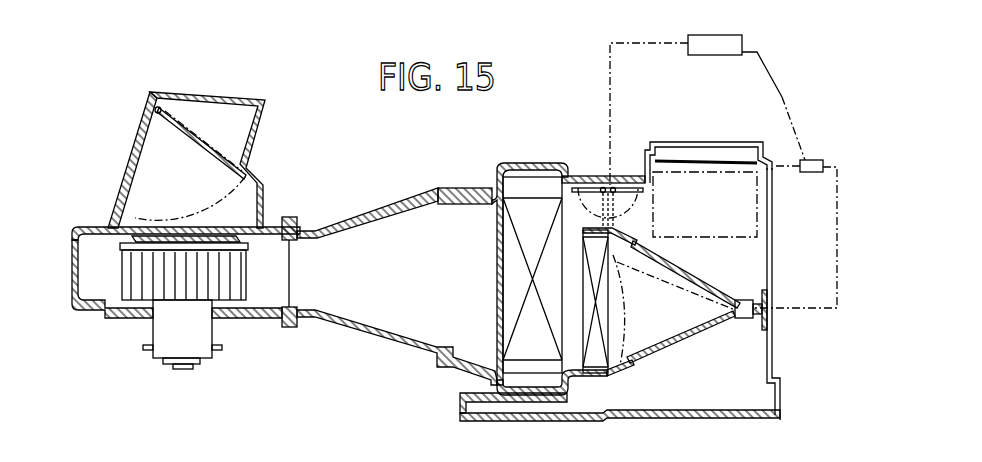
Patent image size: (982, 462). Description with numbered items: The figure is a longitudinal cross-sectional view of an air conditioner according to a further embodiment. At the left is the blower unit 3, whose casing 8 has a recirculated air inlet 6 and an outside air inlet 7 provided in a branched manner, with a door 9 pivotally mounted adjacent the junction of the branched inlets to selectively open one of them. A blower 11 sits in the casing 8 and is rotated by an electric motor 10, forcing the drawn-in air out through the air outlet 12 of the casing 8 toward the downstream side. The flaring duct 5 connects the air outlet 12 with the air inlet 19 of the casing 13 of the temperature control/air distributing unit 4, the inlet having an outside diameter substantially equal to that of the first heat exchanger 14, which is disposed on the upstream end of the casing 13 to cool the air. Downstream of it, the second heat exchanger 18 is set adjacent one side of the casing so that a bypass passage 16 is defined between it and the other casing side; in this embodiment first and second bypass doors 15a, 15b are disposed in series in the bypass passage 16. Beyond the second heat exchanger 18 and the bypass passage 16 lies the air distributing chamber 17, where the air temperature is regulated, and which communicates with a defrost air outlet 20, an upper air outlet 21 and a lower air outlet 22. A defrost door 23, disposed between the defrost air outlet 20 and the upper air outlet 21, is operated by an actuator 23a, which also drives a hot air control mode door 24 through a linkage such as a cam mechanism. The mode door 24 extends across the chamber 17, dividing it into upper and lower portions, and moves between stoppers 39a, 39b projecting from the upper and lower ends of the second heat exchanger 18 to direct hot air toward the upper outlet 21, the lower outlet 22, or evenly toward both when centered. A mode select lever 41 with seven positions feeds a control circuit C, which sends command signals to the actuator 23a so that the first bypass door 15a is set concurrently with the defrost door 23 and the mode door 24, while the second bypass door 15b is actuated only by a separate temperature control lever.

The blower unit 3 is at (91, 220).
The temperature control/air distributing unit 4 is at (518, 160).
The duct 5 is at (357, 240).
The recirculated air inlet 6 is at (130, 163).
The outside air inlet 7 is at (226, 97).
The casing 8 is at (73, 296).
The door 9 is at (148, 142).
The electric motor 10 is at (200, 347).
The blower 11 is at (152, 283).
The air outlet 12 is at (270, 290).
The casing 13 is at (493, 380).
The first heat exchanger 14 is at (537, 357).
The first bypass door 15a is at (580, 180).
The second bypass door 15b is at (625, 188).
The bypass passage 16 is at (588, 200).
The air distributing chamber 17 is at (743, 265).
The second heat exchanger 18 is at (595, 363).
The air inlet 19 is at (467, 185).
The defrost air outlet 20 is at (747, 158).
The upper air outlet 21 is at (759, 180).
The lower air outlet 22 is at (753, 403).
The defrost door 23 is at (677, 160).
The actuator 23a is at (820, 162).
The hot air control mode door 24 is at (693, 333).
The stopper 39a is at (637, 241).
The stopper 39b is at (637, 360).
The mode select lever 41 is at (747, 43).
The control circuit C is at (713, 35).